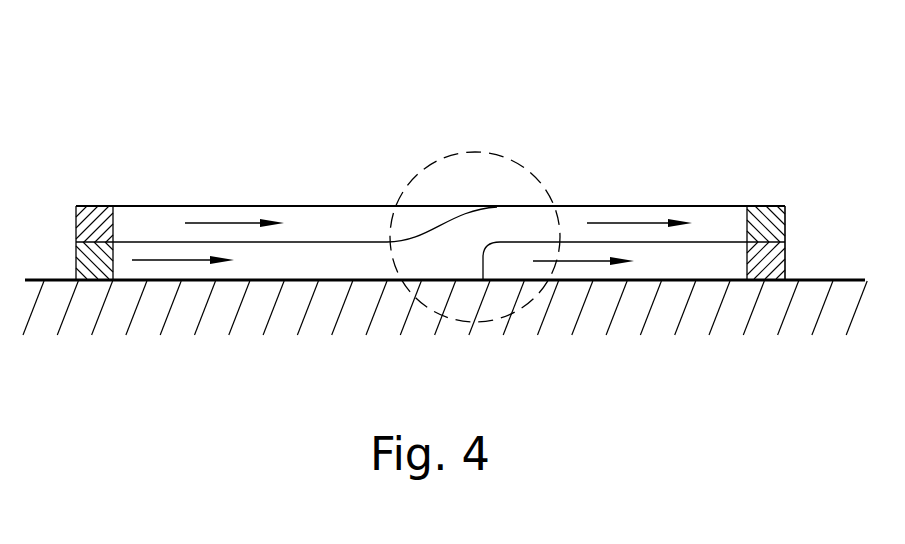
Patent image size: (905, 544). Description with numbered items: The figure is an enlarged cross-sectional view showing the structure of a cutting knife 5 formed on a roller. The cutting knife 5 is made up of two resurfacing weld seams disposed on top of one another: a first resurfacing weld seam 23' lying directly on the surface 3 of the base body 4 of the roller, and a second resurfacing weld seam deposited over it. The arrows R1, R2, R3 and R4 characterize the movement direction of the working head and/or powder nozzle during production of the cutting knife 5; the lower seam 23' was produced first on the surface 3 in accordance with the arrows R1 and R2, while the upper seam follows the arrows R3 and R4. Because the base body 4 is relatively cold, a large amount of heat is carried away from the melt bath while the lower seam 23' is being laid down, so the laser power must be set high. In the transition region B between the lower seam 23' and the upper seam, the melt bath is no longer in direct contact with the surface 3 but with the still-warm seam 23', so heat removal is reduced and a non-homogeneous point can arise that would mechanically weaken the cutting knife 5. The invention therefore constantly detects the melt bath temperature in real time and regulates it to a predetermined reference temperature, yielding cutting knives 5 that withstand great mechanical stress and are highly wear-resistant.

The surface 3 is at (821, 280).
The base body 4 is at (203, 398).
The cutting knife 5 is at (172, 194).
The resurfacing weld seam 23' is at (512, 337).
The arrow R4 is at (216, 222).
The arrow R3 is at (620, 223).
The arrow R2 is at (185, 262).
The arrow R1 is at (578, 262).
The transition region B is at (418, 148).